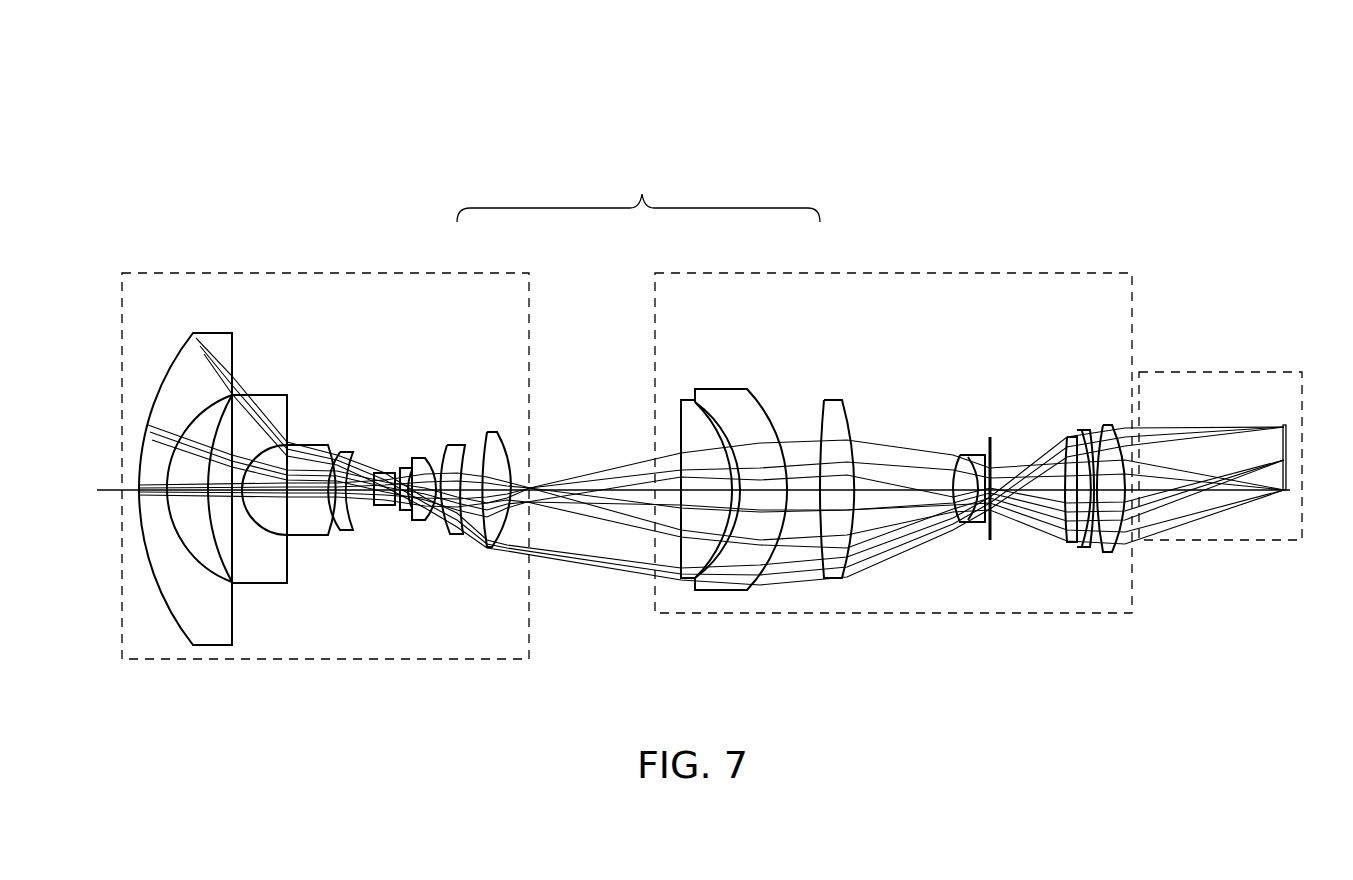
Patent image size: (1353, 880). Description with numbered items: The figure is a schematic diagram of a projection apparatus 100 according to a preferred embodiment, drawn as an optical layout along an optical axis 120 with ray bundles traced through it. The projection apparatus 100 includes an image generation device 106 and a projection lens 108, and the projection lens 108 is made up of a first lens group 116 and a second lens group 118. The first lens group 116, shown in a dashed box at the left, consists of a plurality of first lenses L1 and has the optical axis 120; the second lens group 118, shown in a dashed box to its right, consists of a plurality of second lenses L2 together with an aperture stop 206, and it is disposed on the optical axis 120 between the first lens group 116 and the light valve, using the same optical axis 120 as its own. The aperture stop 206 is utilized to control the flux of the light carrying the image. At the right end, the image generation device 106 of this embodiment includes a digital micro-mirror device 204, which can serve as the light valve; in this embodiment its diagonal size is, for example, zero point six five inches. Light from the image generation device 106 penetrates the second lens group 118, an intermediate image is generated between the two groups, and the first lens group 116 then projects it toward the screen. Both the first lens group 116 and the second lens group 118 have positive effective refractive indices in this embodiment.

The projection apparatus 100 is at (1228, 180).
The projection lens 108 is at (638, 194).
The first lens group 116 is at (478, 270).
The second lens group 118 is at (790, 270).
The image generation device 106 is at (1247, 369).
The optical axis 120 is at (110, 490).
The aperture stop 206 is at (990, 437).
The digital micro-mirror device 204 is at (1287, 428).
The first lenses L1 is at (213, 335).
The second lenses L2 is at (690, 398).